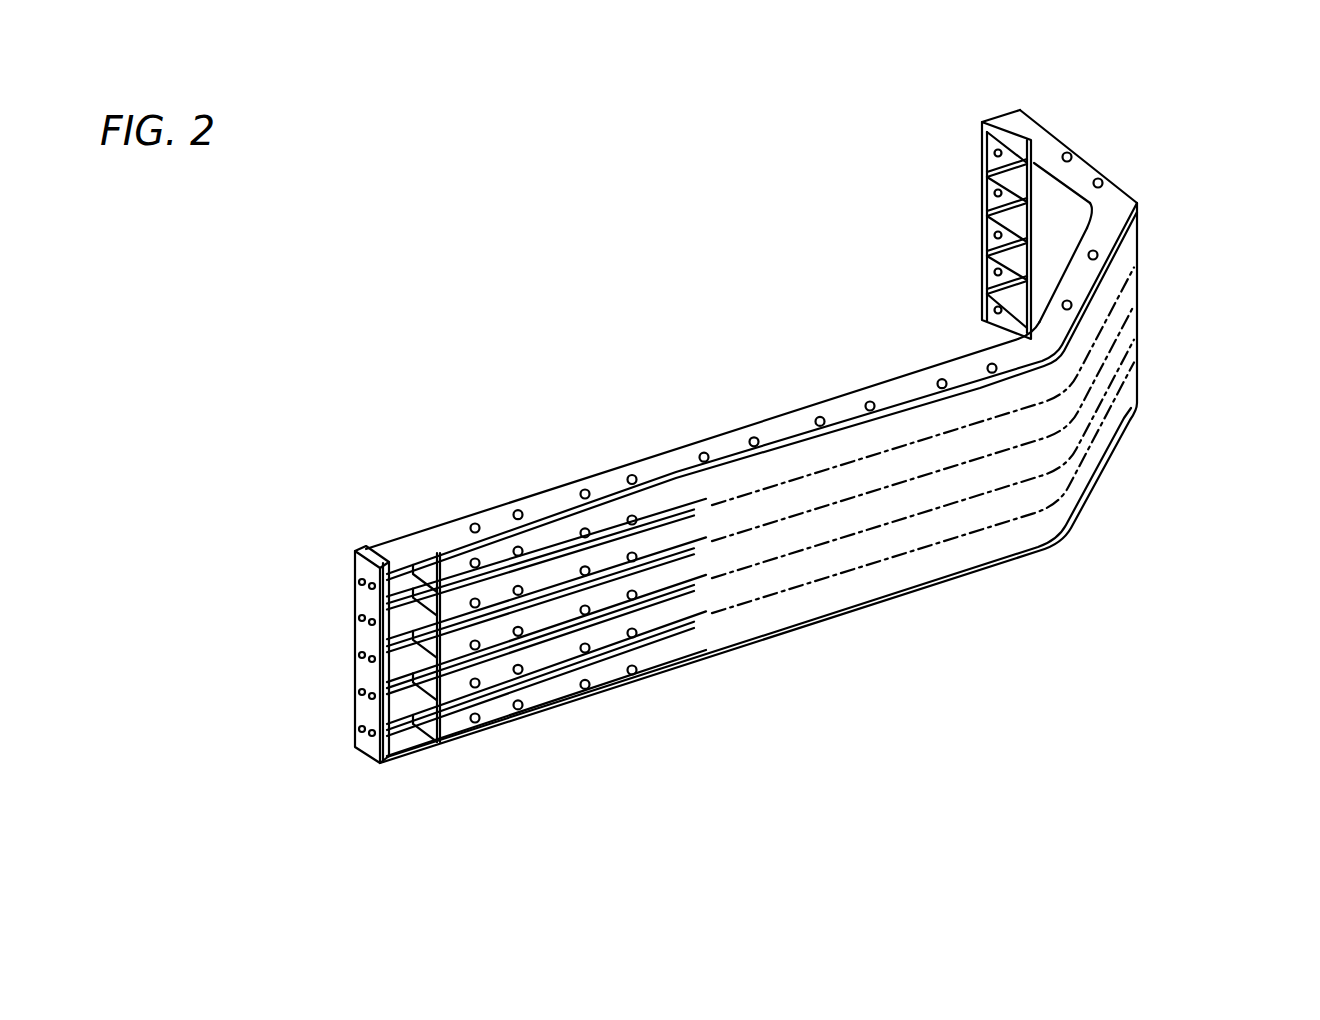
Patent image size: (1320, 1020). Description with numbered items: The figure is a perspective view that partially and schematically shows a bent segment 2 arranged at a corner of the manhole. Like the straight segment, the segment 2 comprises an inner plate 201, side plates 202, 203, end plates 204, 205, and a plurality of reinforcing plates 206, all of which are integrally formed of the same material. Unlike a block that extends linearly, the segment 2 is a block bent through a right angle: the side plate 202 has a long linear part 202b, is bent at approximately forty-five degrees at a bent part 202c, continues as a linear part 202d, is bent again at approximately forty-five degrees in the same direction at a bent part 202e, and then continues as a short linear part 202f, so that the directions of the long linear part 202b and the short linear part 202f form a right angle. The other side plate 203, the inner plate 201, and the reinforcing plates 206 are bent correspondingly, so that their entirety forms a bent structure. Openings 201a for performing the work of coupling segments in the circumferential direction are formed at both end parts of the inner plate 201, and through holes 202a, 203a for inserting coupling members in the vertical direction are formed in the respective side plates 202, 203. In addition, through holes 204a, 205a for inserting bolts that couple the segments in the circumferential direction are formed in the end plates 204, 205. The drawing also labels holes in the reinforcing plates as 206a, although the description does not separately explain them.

The segment 2 is at (767, 413).
The inner plate 201 is at (1038, 178).
The openings 201a is at (1005, 290).
The side plate 202 is at (552, 502).
The through holes 202a is at (637, 483).
The long linear part 202b is at (832, 417).
The bent part 202c is at (1047, 352).
The linear part 202d is at (1097, 275).
The bent part 202e is at (1120, 203).
The short linear part 202f is at (1080, 167).
The side plate 203 is at (466, 740).
The through holes 203a is at (587, 687).
The end plate 204 is at (368, 575).
The through holes 204a is at (358, 620).
The end plate 205 is at (983, 148).
The through holes 205a is at (997, 197).
The reinforcing plates 206 is at (550, 580).
The rail holes 206a is at (637, 633).